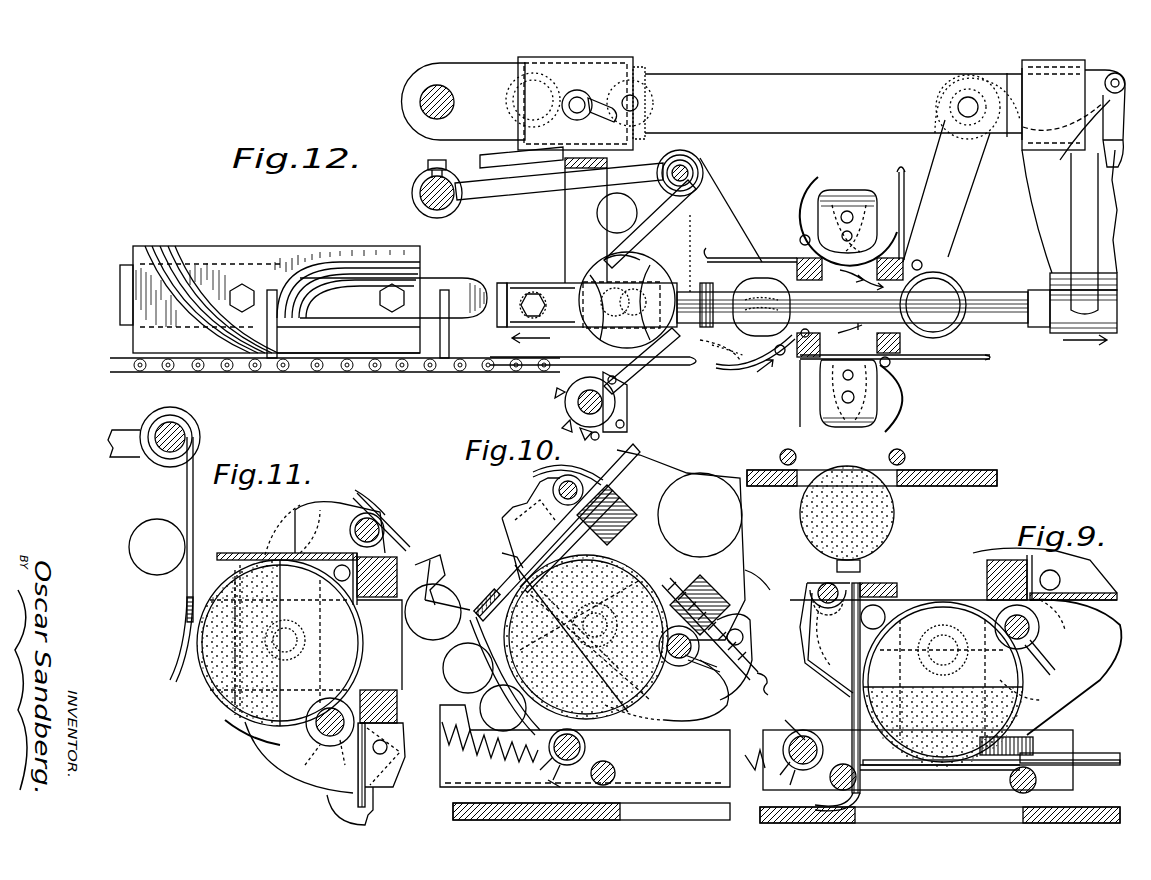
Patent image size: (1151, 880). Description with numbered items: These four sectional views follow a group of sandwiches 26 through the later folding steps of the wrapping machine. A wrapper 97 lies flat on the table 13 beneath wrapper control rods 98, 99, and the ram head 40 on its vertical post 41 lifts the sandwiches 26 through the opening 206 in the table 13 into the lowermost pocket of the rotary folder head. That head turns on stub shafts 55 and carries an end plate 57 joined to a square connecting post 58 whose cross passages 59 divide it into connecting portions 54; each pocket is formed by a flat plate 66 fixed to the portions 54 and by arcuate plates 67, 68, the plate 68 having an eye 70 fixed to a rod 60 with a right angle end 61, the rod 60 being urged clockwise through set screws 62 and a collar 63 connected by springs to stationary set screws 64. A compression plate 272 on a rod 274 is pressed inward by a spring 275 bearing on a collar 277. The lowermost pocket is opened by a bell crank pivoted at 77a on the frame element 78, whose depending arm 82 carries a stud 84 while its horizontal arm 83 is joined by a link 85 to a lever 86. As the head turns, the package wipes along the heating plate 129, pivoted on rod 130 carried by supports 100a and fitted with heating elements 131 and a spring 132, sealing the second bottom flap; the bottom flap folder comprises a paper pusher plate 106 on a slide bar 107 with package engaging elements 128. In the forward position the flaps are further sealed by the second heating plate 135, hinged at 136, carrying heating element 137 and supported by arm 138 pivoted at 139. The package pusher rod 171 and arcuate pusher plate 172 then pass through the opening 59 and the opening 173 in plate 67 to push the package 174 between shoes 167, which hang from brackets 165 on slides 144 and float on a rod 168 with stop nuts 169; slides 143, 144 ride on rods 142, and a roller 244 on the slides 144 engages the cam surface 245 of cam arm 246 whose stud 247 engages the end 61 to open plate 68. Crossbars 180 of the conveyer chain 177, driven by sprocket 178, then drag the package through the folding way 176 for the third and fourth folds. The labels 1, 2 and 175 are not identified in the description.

In FIG. 12, the rotary drum 1 is at (640, 302).
In FIG. 11, the rotary drum 1 is at (280, 643).
In FIG. 10, the rotary drum 1 is at (625, 600).
In FIG. 9, the rotary drum 1 is at (943, 684).
In FIG. 12, the shaft 2 is at (611, 302).
In FIG. 12, the table 13 is at (945, 488).
In FIG. 11, the table 13 is at (453, 812).
In FIG. 10, the table 13 is at (730, 812).
In FIG. 9, the table 13 is at (1095, 815).
In FIG. 12, the sandwiches 26 is at (880, 530).
In FIG. 9, the sandwiches 26 is at (905, 755).
In FIG. 12, the ram head 40 is at (862, 564).
In FIG. 12, the vertical post 41 is at (855, 572).
In FIG. 12, the connecting portions 54 is at (905, 262).
In FIG. 11, the connecting portions 54 is at (383, 640).
In FIG. 10, the connecting portions 54 is at (625, 510).
In FIG. 9, the connecting portions 54 is at (990, 585).
In FIG. 11, the stub shafts 55 is at (425, 657).
In FIG. 10, the stub shafts 55 is at (700, 490).
In FIG. 12, the end plate 57 is at (863, 203).
In FIG. 10, the end plate 57 is at (680, 583).
In FIG. 9, the end plate 57 is at (826, 635).
In FIG. 11, the square connecting post 58 is at (430, 577).
In FIG. 10, the square connecting post 58 is at (660, 545).
In FIG. 9, the square connecting post 58 is at (975, 565).
In FIG. 12, the cross passages 59 is at (858, 300).
In FIG. 11, the cross passages 59 is at (372, 660).
In FIG. 10, the cross passages 59 is at (757, 575).
In FIG. 9, the cross passages 59 is at (935, 590).
In FIG. 12, the rod 60 is at (800, 241).
In FIG. 11, the rod 60 is at (385, 525).
In FIG. 10, the rod 60 is at (570, 468).
In FIG. 9, the rod 60 is at (828, 588).
In FIG. 12, the right angle end 61 is at (905, 365).
In FIG. 11, the right angle end 61 is at (402, 777).
In FIG. 10, the right angle end 61 is at (766, 633).
In FIG. 9, the right angle end 61 is at (1075, 568).
In FIG. 11, the set screws 62 is at (278, 755).
In FIG. 10, the set screws 62 is at (696, 691).
In FIG. 9, the set screws 62 is at (1074, 667).
In FIG. 11, the collar 63 is at (348, 508).
In FIG. 10, the collar 63 is at (525, 490).
In FIG. 9, the collar 63 is at (808, 590).
In FIG. 11, the stationary set screws 64 is at (205, 620).
In FIG. 10, the stationary set screws 64 is at (591, 680).
In FIG. 9, the stationary set screws 64 is at (973, 713).
In FIG. 12, the flat plate 66 is at (790, 400).
In FIG. 11, the flat plate 66 is at (253, 547).
In FIG. 10, the flat plate 66 is at (633, 620).
In FIG. 9, the flat plate 66 is at (1080, 593).
In FIG. 12, the arcuate plate 67 is at (963, 273).
In FIG. 11, the arcuate plate 67 is at (395, 545).
In FIG. 10, the arcuate plate 67 is at (595, 475).
In FIG. 9, the arcuate plate 67 is at (920, 600).
In FIG. 12, the arcuate plate 68 is at (803, 202).
In FIG. 11, the arcuate plate 68 is at (222, 735).
In FIG. 10, the arcuate plate 68 is at (636, 714).
In FIG. 9, the arcuate plate 68 is at (1031, 690).
In FIG. 11, the eye 70 is at (381, 520).
In FIG. 10, the eye 70 is at (708, 676).
In FIG. 9, the eye 70 is at (1048, 657).
In FIG. 12, the bell crank pivot 77a is at (968, 100).
In FIG. 12, the stationary frame element 78 is at (915, 80).
In FIG. 12, the depending arm 82 is at (965, 186).
In FIG. 12, the horizontal arm 83 is at (1098, 98).
In FIG. 12, the laterally projecting stud 84 is at (955, 346).
In FIG. 12, the link 85 is at (1068, 148).
In FIG. 12, the lever 86 is at (1110, 170).
In FIG. 12, the wrapper 97 is at (595, 335).
In FIG. 11, the wrapper 97 is at (198, 580).
In FIG. 9, the wrapper 97 is at (940, 772).
In FIG. 12, the wrapper control rod 98 is at (783, 453).
In FIG. 10, the wrapper control rod 98 is at (615, 770).
In FIG. 9, the wrapper control rod 98 is at (839, 770).
In FIG. 12, the wrapper control rod 99 is at (908, 457).
In FIG. 9, the wrapper control rod 99 is at (1033, 781).
In FIG. 10, the supports 100a is at (585, 746).
In FIG. 9, the supports 100a is at (935, 754).
In FIG. 9, the paper pusher plate 106 is at (991, 778).
In FIG. 9, the slide bar 107 is at (1085, 755).
In FIG. 9, the package engaging elements 128 is at (1020, 740).
In FIG. 10, the heating plate 129 is at (470, 615).
In FIG. 9, the heating plate 129 is at (791, 719).
In FIG. 10, the rod 130 is at (585, 750).
In FIG. 9, the rod 130 is at (810, 740).
In FIG. 10, the heating elements 131 is at (490, 702).
In FIG. 10, the spring 132 is at (599, 763).
In FIG. 9, the spring 132 is at (755, 753).
In FIG. 12, the second heating plate 135 is at (668, 210).
In FIG. 11, the second heating plate 135 is at (193, 536).
In FIG. 12, the hinge connection 136 is at (700, 168).
In FIG. 11, the hinge connection 136 is at (190, 428).
In FIG. 12, the heating element 137 is at (622, 204).
In FIG. 11, the heating element 137 is at (130, 548).
In FIG. 12, the arm 138 is at (520, 188).
In FIG. 11, the arm 138 is at (130, 450).
In FIG. 12, the pivot 139 is at (443, 213).
In FIG. 12, the fore-and-aft extending rods 142 is at (450, 70).
In FIG. 12, the slides 143 is at (1040, 60).
In FIG. 12, the slides 144 is at (617, 62).
In FIG. 12, the brackets 165 is at (565, 242).
In FIG. 12, the stationary shoes 167 is at (606, 293).
In FIG. 12, the rod 168 is at (545, 300).
In FIG. 12, the stop nuts 169 is at (592, 294).
In FIG. 12, the package pusher rod 171 is at (1010, 300).
In FIG. 12, the arcuate pusher plate 172 is at (686, 321).
In FIG. 11, the arcuate pusher plate 172 is at (433, 612).
In FIG. 12, the opening 173 is at (825, 354).
In FIG. 10, the opening 173 is at (648, 575).
In FIG. 12, the package 174 is at (655, 272).
In FIG. 12, the leg 175 is at (1045, 219).
In FIG. 12, the folding way 176 is at (281, 250).
In FIG. 12, the conveyer chain 177 is at (470, 375).
In FIG. 12, the drive sprocket 178 is at (615, 415).
In FIG. 12, the crossbars 180 is at (277, 338).
In FIG. 12, the opening 206 is at (805, 480).
In FIG. 10, the opening 206 is at (640, 815).
In FIG. 9, the opening 206 is at (920, 817).
In FIG. 12, the roller 244 is at (520, 85).
In FIG. 12, the cam surface 245 is at (589, 112).
In FIG. 12, the cam arm 246 is at (725, 190).
In FIG. 12, the stud 247 is at (743, 367).
In FIG. 12, the compression plate 272 is at (983, 330).
In FIG. 11, the compression plate 272 is at (215, 700).
In FIG. 10, the compression plate 272 is at (535, 588).
In FIG. 9, the compression plate 272 is at (852, 706).
In FIG. 12, the rod 274 is at (850, 400).
In FIG. 11, the rod 274 is at (293, 633).
In FIG. 10, the rod 274 is at (595, 613).
In FIG. 11, the spring 275 is at (306, 636).
In FIG. 10, the spring 275 is at (605, 623).
In FIG. 11, the collar 277 is at (323, 662).
In FIG. 10, the collar 277 is at (620, 652).